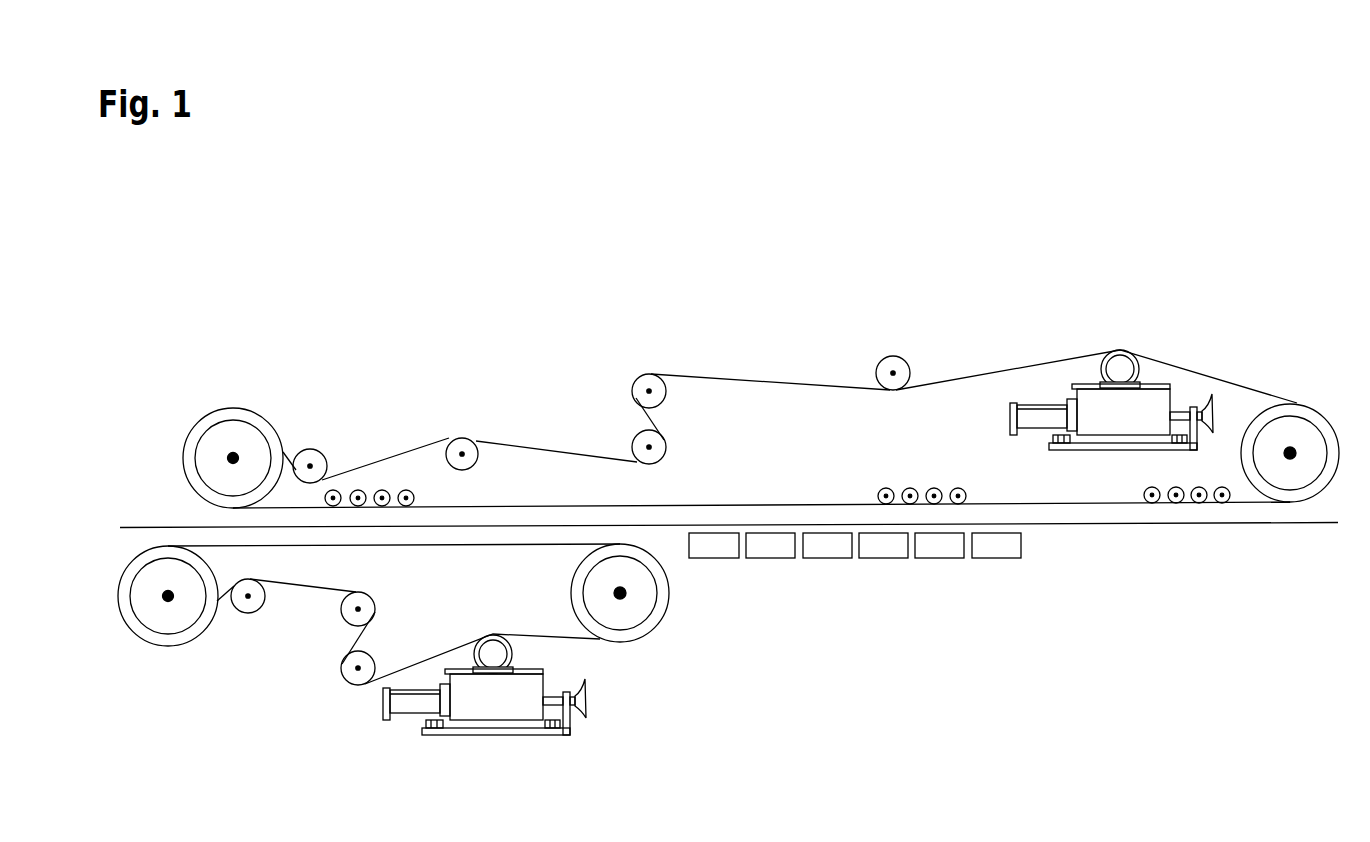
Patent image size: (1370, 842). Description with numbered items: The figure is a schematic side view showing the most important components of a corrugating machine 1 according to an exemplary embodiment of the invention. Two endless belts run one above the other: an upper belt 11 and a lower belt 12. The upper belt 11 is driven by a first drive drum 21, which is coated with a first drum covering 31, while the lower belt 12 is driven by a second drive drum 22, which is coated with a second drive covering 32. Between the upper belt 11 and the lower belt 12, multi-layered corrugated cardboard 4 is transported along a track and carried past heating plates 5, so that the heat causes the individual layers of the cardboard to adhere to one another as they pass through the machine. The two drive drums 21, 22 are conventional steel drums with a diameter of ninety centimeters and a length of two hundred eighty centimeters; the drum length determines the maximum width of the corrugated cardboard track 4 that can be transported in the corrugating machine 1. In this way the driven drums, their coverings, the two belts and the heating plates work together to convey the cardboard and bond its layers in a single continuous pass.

The corrugating machine 1 is at (496, 327).
The multi-layered corrugated cardboard 4 is at (1192, 526).
The heating plates 5 is at (825, 545).
The upper belt 11 is at (716, 378).
The lower belt 12 is at (422, 660).
The first drive drum 21 is at (252, 439).
The second drive drum 22 is at (187, 615).
The first drum covering 31 is at (224, 414).
The second drive covering 32 is at (171, 641).